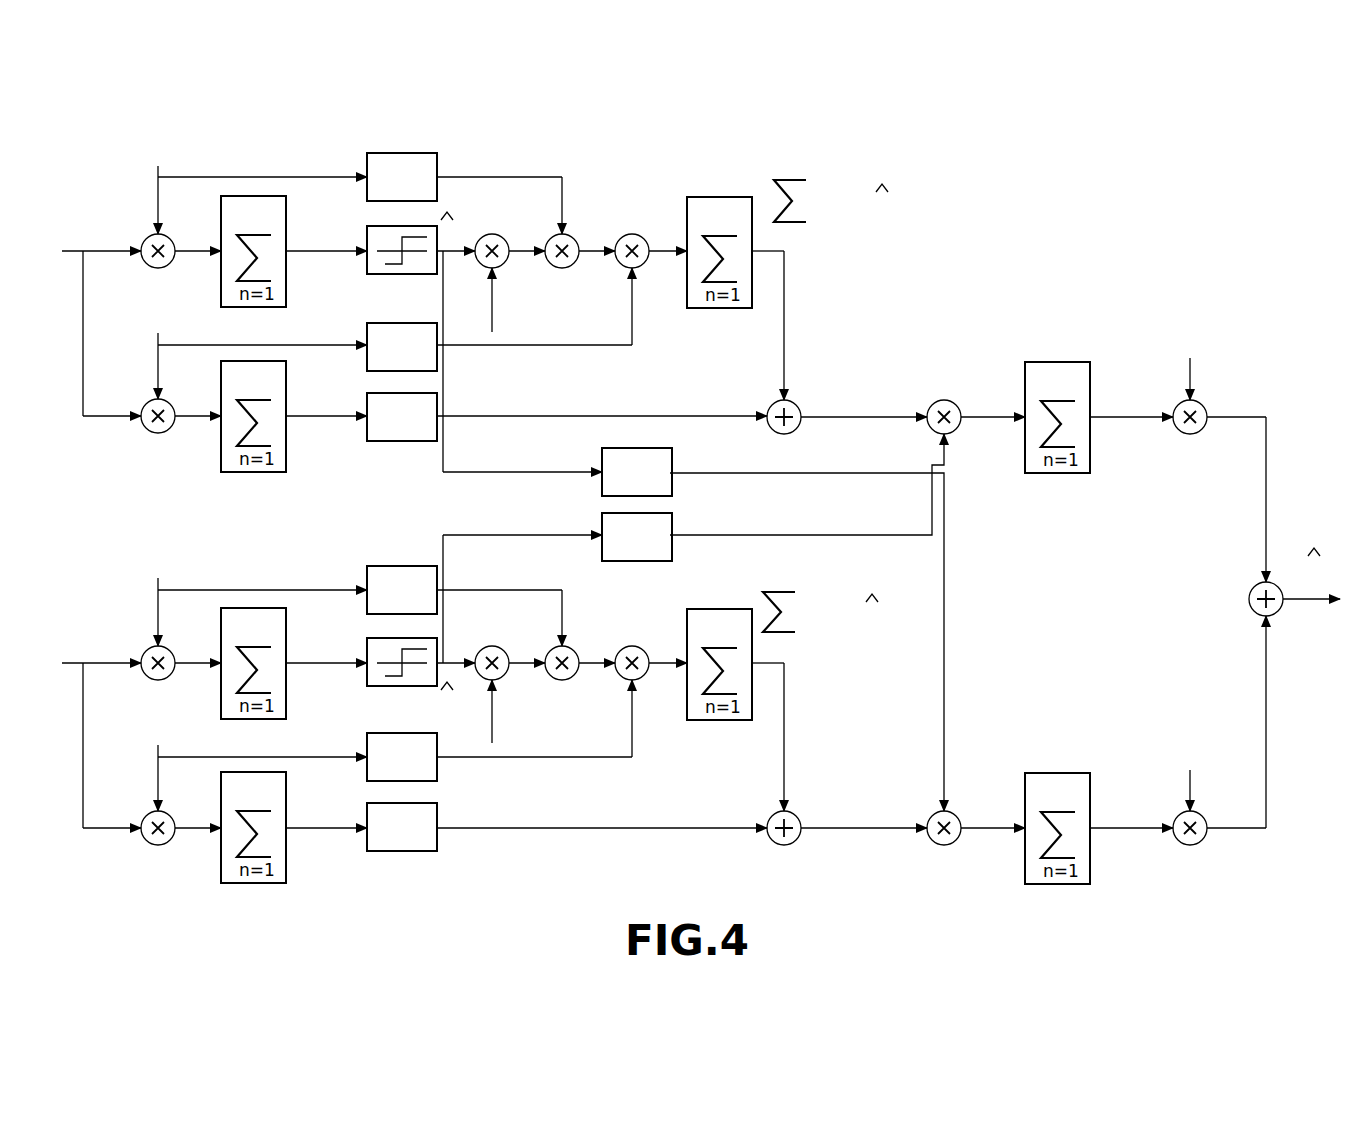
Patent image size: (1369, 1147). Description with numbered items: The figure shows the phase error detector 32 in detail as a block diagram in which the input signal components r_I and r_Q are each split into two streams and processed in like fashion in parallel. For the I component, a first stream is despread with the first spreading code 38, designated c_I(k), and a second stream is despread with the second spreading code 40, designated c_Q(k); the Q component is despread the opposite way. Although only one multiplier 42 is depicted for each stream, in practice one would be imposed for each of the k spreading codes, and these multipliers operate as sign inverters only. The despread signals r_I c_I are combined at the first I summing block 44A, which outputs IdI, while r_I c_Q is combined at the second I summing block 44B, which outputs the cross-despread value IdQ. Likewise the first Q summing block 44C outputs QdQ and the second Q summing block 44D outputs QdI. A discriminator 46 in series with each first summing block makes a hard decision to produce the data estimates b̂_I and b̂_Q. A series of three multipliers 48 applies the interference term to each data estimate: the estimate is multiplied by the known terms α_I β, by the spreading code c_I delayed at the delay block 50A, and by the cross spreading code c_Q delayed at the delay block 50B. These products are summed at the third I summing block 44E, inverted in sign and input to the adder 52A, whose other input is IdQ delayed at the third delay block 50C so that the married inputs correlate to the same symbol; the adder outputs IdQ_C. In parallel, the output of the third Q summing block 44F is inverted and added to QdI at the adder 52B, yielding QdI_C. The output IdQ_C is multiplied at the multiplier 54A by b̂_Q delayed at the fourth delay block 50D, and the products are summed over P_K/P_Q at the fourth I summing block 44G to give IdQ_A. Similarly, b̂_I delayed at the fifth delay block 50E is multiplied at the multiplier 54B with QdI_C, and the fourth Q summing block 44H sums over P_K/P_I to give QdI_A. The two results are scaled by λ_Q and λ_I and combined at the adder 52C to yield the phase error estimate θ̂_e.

The phase error detector 32 is at (1040, 150).
The first spreading code 38 is at (160, 128).
The second spreading code 40 is at (143, 331).
The multiplier 42 is at (146, 236).
The first I summing block 44A is at (263, 196).
The second I summing block 44B is at (250, 472).
The first Q summing block 44C is at (263, 608).
The second Q summing block 44D is at (250, 883).
The third I summing block 44E is at (705, 197).
The third Q summing block 44F is at (705, 609).
The fourth I summing block 44G is at (1045, 362).
The fourth Q summing block 44H is at (1045, 773).
The discriminator 46 is at (368, 273).
The multiplier 48 is at (490, 233).
The delay block 50A is at (402, 153).
The delay block 50B is at (368, 325).
The third delay block 50C is at (390, 443).
The fourth delay block 50D is at (603, 513).
The fifth delay block 50E is at (603, 448).
The adder 52A is at (772, 404).
The adder 52B is at (772, 815).
The adder 52C is at (1252, 612).
The multiplier 54A is at (937, 400).
The multiplier 54B is at (938, 845).